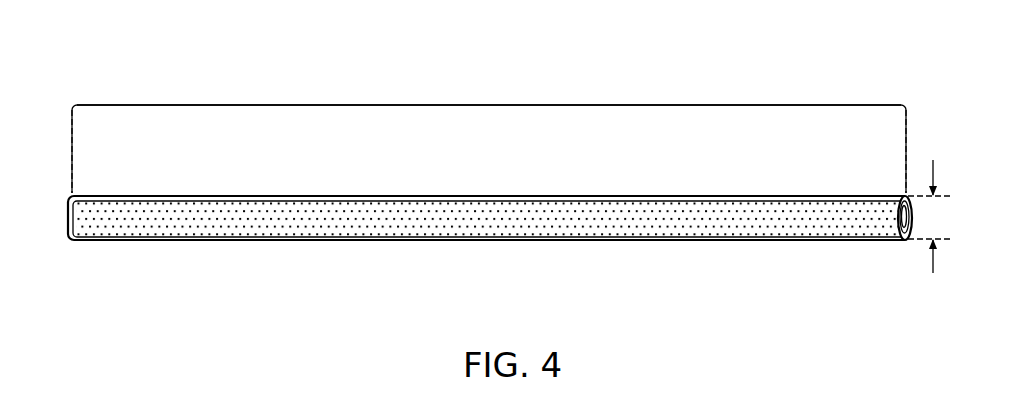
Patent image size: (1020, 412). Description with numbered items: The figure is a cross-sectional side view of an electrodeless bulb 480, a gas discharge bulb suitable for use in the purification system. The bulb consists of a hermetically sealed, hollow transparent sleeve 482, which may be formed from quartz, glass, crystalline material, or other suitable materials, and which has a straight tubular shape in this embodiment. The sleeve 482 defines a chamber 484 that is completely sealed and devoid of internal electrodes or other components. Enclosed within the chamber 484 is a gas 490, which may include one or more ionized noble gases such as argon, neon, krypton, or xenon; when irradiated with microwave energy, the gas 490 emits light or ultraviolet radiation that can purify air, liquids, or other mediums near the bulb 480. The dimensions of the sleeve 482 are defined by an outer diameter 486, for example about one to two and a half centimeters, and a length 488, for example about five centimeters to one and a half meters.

The electrodeless bulb 480 is at (830, 71).
The transparent sleeve 482 is at (513, 195).
The chamber 484 is at (199, 209).
The outer diameter 486 is at (933, 176).
The length 488 is at (490, 104).
The gas 490 is at (394, 217).